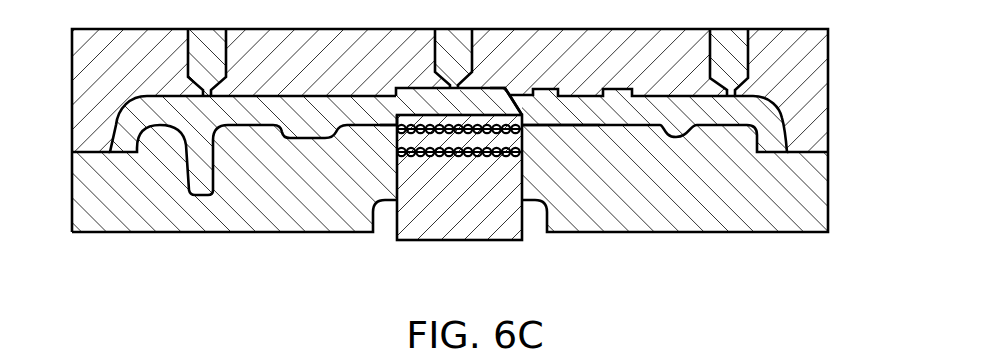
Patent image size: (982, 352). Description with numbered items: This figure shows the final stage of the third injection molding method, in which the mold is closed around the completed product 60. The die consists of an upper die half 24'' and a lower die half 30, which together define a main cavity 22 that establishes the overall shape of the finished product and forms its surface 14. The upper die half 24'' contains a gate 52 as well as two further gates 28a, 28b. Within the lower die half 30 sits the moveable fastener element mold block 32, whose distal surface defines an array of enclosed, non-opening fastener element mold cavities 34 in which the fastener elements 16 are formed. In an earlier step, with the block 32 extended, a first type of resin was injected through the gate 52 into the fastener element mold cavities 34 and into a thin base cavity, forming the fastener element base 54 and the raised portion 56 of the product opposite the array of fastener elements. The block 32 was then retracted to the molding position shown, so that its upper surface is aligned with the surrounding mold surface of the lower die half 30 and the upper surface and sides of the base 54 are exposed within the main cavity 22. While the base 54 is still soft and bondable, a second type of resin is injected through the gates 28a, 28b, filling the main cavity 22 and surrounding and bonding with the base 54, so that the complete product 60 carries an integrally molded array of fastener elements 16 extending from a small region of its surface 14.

The upper die half 24'' is at (491, 137).
The lower die half 30 is at (72, 187).
The main cavity 22 is at (780, 118).
The complete product 60 is at (320, 95).
The raised portion 56 is at (503, 88).
The gate 28a is at (212, 29).
The gate 52 is at (457, 30).
The gate 28b is at (723, 29).
The moveable fastener element mold block 32 is at (477, 241).
The fastener element mold cavities 34 is at (407, 130).
The fastener elements 16 is at (448, 115).
The fastener element base 54 is at (393, 122).
The surface 14 is at (565, 127).